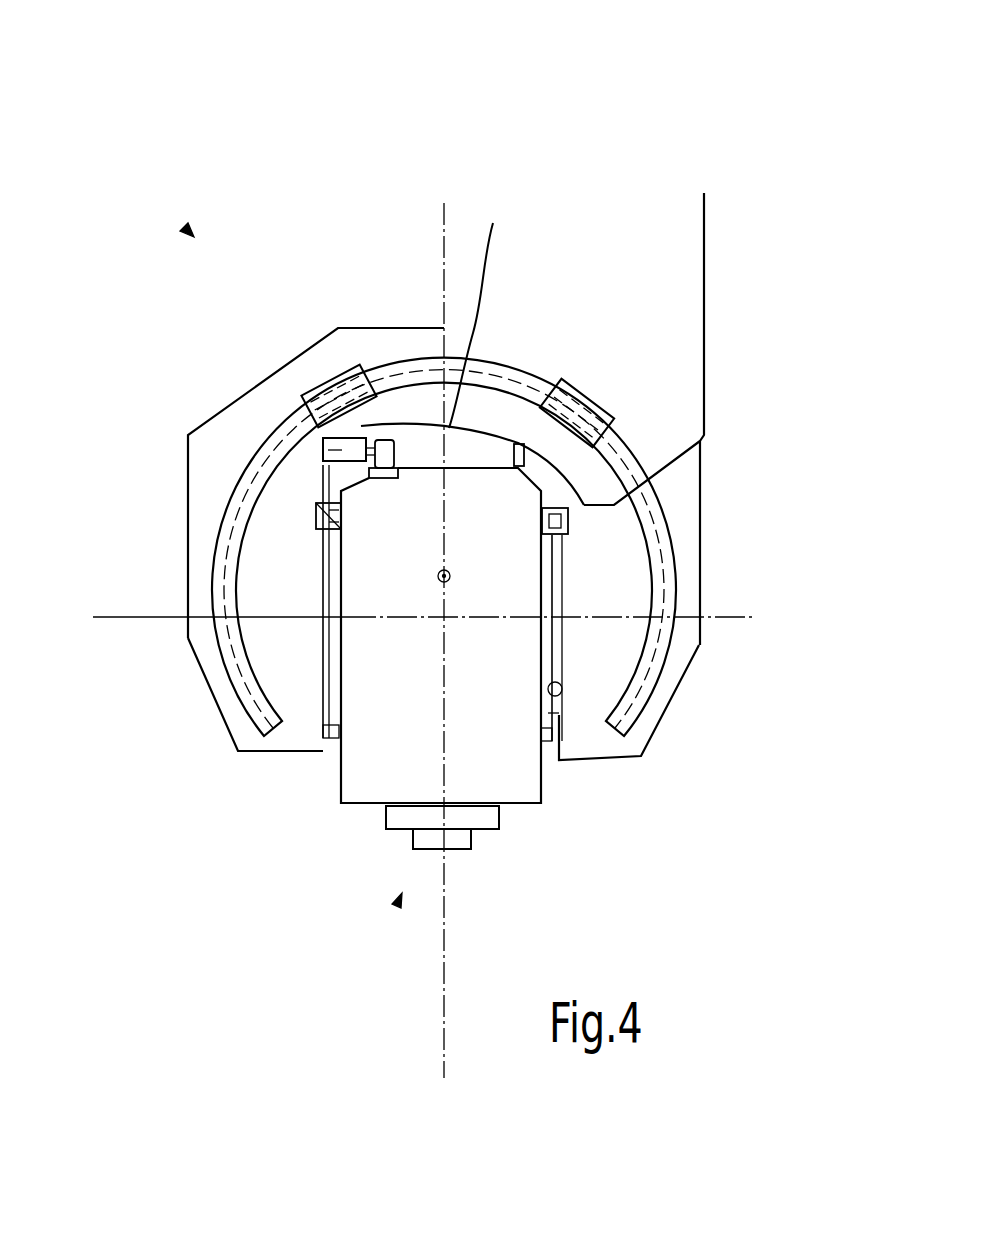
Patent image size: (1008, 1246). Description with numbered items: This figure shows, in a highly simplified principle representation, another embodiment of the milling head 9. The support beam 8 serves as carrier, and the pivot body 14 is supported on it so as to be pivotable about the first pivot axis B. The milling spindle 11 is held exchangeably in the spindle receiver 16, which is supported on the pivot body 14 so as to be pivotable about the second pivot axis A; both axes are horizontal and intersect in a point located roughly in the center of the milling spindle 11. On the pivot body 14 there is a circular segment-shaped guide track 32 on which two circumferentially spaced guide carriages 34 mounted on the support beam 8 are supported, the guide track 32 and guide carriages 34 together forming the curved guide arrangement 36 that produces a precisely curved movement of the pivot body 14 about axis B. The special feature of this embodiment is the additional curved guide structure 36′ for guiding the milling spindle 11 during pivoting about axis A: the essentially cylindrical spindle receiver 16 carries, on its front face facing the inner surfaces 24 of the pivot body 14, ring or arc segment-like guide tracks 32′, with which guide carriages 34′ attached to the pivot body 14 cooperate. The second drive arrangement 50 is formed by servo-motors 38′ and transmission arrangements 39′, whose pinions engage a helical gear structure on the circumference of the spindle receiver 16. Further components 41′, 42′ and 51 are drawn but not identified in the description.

The support beam 8 is at (705, 268).
The milling head 9 is at (186, 232).
The milling spindle 11 is at (401, 895).
The pivot body 14 is at (705, 483).
The spindle receiver 16 is at (362, 788).
The inner surfaces 24 is at (561, 686).
The guide track 32 is at (233, 532).
The guide tracks 32′ is at (332, 705).
The guide carriages 34 is at (313, 393).
The clamp 34′ is at (313, 516).
The curved guide arrangement 36 is at (280, 371).
The curved guide structure 36′ is at (293, 550).
The servo-motors 38′ is at (337, 452).
The transmission arrangements 39′ is at (410, 433).
The pin 41′ is at (381, 442).
The plate 42′ is at (382, 484).
The second drive arrangement 50 is at (356, 420).
The magnet 51 is at (533, 442).
The second pivot axis A is at (137, 618).
The first pivot axis B is at (454, 640).